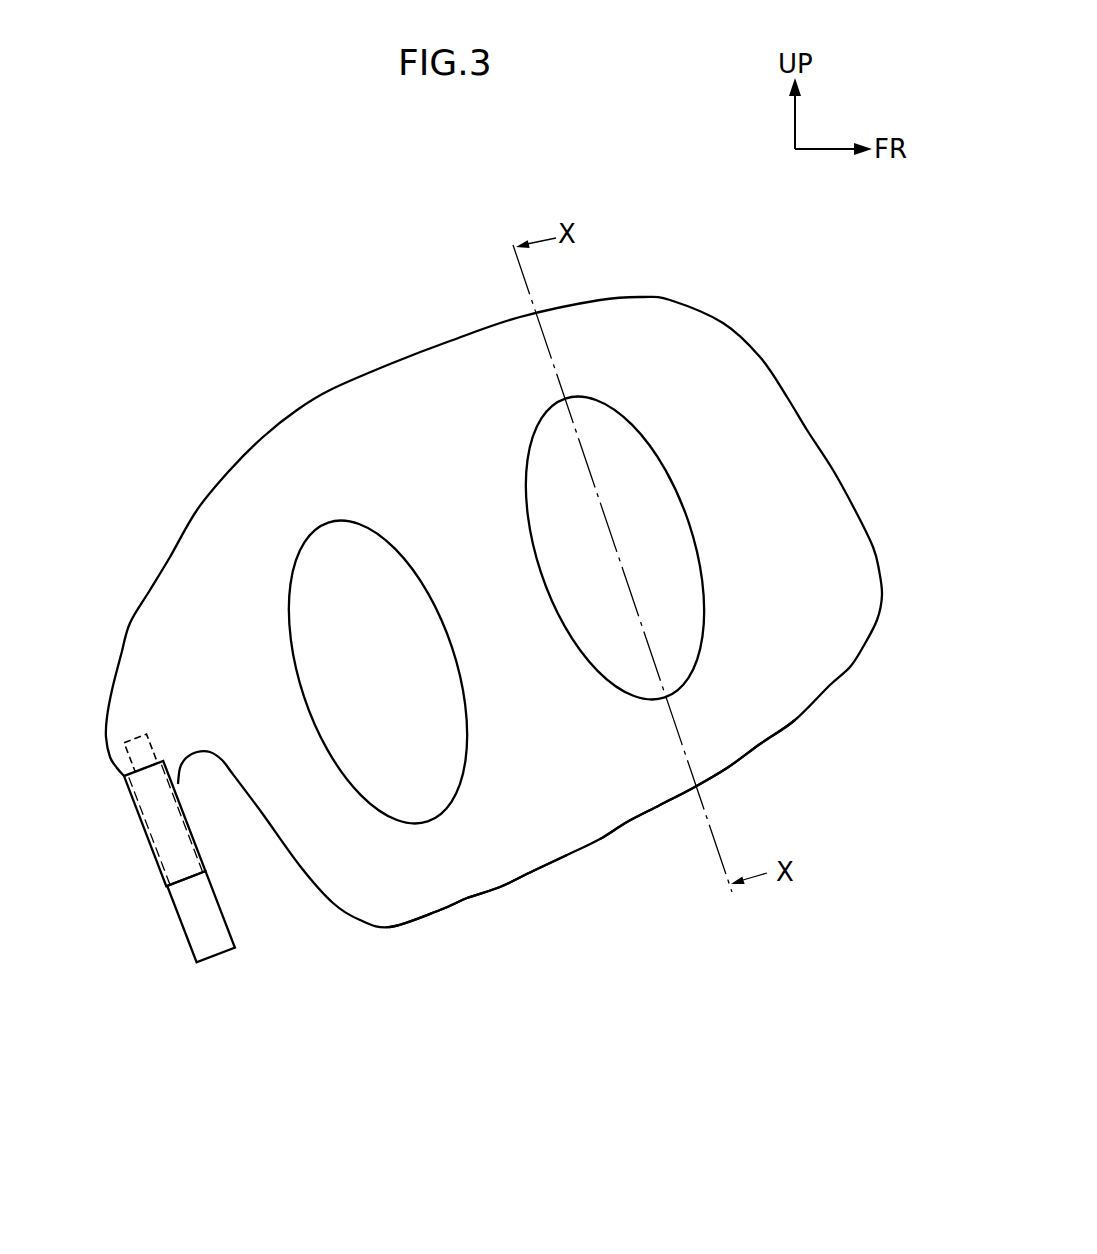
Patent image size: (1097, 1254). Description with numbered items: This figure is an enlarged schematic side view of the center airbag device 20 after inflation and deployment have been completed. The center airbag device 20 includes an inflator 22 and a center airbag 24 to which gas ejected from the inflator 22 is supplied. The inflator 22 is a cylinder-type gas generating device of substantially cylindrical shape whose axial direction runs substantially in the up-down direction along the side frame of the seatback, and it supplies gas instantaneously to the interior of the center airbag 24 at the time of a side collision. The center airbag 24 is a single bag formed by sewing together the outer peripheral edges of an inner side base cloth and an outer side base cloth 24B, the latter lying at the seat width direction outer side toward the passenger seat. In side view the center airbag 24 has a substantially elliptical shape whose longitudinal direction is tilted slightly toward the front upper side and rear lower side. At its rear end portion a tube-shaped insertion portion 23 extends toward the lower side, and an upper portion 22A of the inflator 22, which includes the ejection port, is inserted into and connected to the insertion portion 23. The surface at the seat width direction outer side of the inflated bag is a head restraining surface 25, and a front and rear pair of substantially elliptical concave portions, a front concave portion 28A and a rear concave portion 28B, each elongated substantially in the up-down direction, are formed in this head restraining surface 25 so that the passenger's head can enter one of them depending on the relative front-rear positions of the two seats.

The center airbag device 20 is at (191, 358).
The inflator 22 is at (183, 953).
The upper portion 22A is at (134, 753).
The insertion portion 23 is at (150, 857).
The center airbag 24 is at (324, 383).
The outer side base cloth 24B is at (621, 780).
The head restraining surface 25 is at (523, 731).
The concave portion 28A is at (689, 615).
The concave portion 28B is at (407, 793).